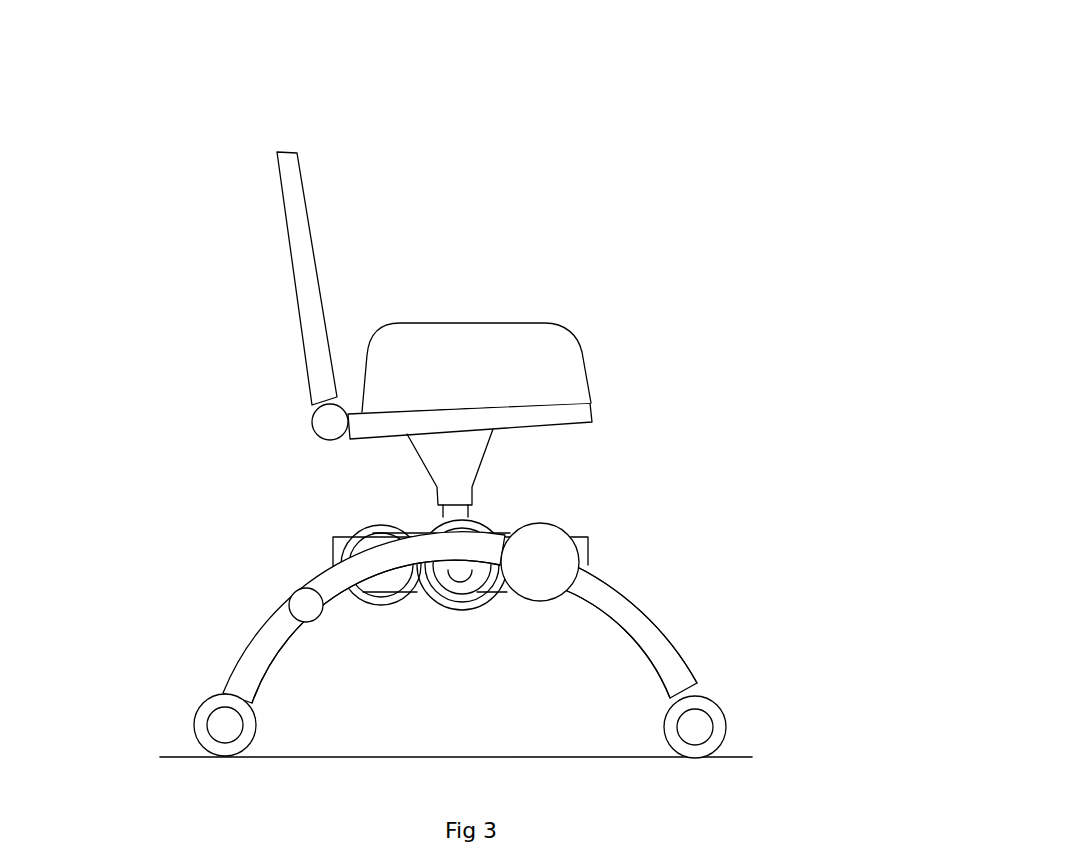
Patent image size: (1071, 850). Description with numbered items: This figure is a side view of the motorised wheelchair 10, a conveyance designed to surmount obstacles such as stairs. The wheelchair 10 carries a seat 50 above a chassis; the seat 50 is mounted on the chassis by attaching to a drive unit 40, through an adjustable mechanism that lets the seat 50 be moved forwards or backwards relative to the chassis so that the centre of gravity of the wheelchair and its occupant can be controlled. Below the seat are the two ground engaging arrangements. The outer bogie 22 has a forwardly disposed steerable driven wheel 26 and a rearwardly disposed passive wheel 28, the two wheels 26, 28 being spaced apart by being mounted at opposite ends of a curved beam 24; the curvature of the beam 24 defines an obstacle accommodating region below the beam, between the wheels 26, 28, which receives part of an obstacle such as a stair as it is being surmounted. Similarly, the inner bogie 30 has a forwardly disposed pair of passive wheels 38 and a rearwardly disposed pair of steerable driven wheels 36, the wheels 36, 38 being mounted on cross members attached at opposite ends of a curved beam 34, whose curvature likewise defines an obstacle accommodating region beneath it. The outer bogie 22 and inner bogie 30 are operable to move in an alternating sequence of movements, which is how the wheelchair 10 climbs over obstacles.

The motorised wheelchair 10 is at (563, 95).
The outer bogie 22 is at (680, 653).
The curved beam 24 is at (622, 610).
The steerable driven wheel 26 is at (720, 718).
The passive wheel 28 is at (305, 588).
The inner bogie 30 is at (250, 642).
The curved beam 34 is at (248, 673).
The steerable driven wheels 36 is at (207, 727).
The passive wheels 38 is at (600, 617).
The drive unit 40 is at (580, 540).
The seat 50 is at (290, 203).